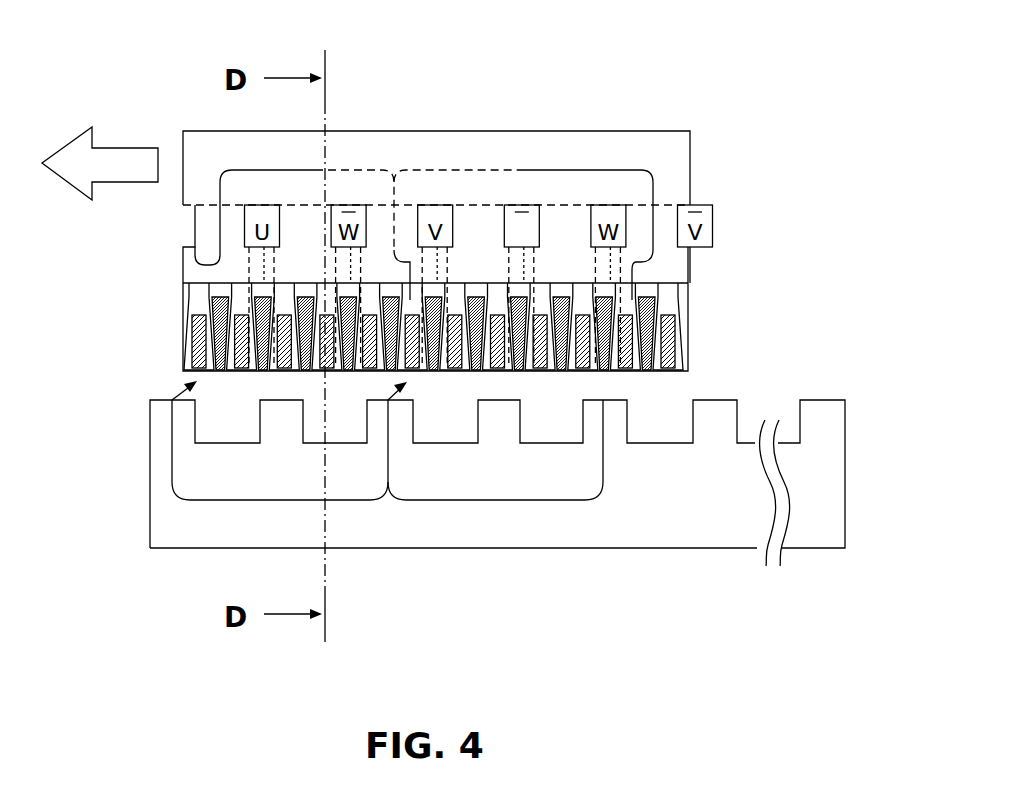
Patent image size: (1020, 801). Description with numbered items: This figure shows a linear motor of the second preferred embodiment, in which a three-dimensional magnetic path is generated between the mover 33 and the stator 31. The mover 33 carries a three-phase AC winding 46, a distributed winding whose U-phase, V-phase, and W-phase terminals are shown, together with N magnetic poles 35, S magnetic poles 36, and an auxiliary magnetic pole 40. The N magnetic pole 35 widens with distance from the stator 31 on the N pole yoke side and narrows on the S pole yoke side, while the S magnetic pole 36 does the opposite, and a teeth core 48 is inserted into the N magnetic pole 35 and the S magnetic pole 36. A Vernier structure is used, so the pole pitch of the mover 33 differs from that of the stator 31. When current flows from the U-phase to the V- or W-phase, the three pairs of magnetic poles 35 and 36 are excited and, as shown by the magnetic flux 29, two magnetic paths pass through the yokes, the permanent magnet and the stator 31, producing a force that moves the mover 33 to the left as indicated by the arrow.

The magnetic flux 29 is at (613, 170).
The stator 31 is at (718, 548).
The mover 33 is at (478, 131).
The N magnetic pole 35 is at (433, 383).
The S magnetic pole 36 is at (503, 383).
The auxiliary magnetic pole 40 is at (520, 381).
The three-phase AC winding 46 is at (522, 205).
The teeth core 48 is at (465, 383).